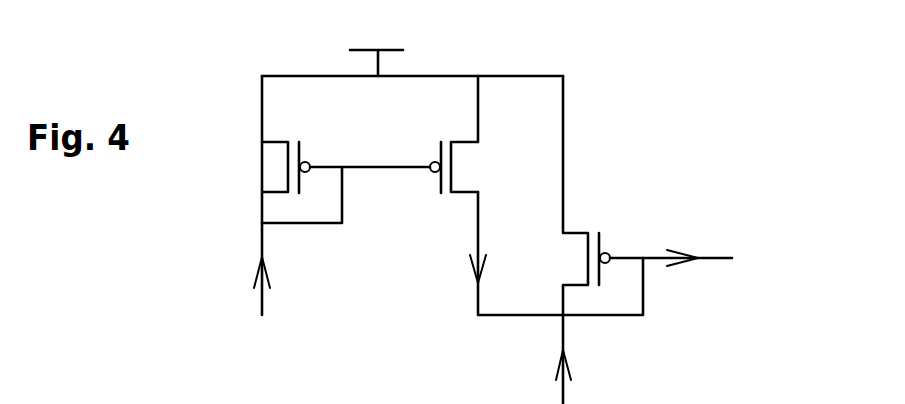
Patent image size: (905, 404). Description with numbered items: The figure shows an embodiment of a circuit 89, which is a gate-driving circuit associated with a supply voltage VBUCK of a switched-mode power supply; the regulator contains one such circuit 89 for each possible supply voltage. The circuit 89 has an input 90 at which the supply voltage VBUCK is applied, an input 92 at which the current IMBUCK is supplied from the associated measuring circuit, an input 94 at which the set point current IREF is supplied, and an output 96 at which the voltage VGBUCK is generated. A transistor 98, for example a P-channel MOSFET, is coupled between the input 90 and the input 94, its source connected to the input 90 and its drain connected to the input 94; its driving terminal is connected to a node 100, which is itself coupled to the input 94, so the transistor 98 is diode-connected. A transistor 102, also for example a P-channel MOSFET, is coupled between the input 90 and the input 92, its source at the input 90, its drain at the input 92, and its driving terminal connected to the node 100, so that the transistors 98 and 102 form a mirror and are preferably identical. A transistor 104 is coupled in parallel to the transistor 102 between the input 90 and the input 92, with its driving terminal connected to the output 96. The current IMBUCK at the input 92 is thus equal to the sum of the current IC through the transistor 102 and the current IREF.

The circuit 89 is at (635, 75).
The input 90 is at (340, 50).
The input 92 is at (562, 397).
The input 94 is at (262, 298).
The output 96 is at (722, 258).
The transistor 98 is at (277, 142).
The node 100 is at (343, 167).
The transistor 102 is at (460, 196).
The transistor 104 is at (578, 232).